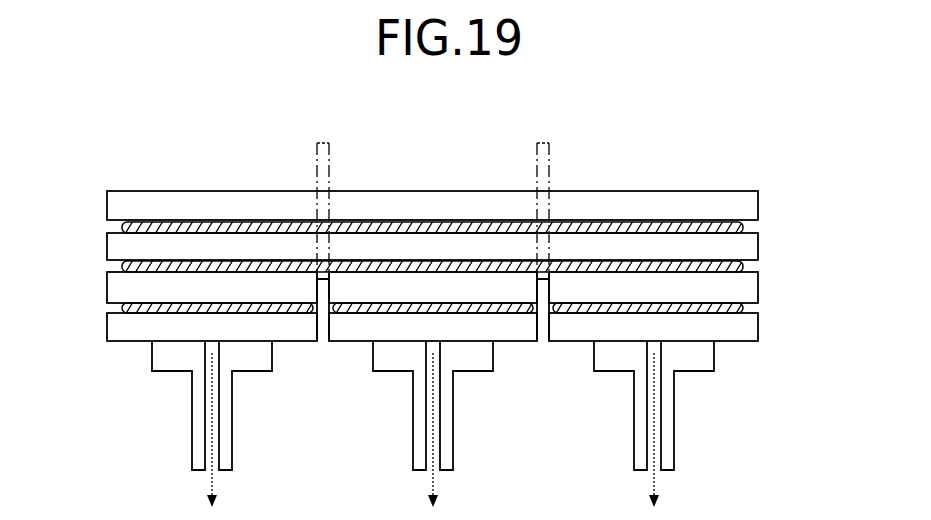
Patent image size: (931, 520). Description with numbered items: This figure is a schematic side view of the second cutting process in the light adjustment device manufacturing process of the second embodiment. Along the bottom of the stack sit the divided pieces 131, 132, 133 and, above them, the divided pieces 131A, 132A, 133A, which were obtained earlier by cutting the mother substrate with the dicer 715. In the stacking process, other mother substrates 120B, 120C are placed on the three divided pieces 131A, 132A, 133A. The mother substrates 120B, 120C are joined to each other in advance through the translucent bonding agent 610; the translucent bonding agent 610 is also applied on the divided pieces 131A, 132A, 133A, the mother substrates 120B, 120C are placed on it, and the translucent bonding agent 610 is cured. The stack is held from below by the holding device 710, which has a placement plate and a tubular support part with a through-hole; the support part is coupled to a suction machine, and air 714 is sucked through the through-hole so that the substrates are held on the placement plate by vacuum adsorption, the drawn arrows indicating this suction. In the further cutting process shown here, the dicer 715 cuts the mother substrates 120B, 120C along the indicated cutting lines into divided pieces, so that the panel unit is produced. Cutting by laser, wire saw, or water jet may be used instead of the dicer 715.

The dicer 715 is at (550, 150).
The mother substrate 120C is at (746, 205).
The mother substrate 120B is at (746, 245).
The translucent bonding agent 610 is at (122, 228).
The divided piece 131A is at (120, 290).
The divided piece 132A is at (513, 285).
The divided piece 133A is at (746, 285).
The divided piece 131 is at (119, 327).
The divided piece 132 is at (340, 327).
The divided piece 133 is at (561, 327).
The holding device 710 is at (192, 455).
The air 714 is at (211, 489).